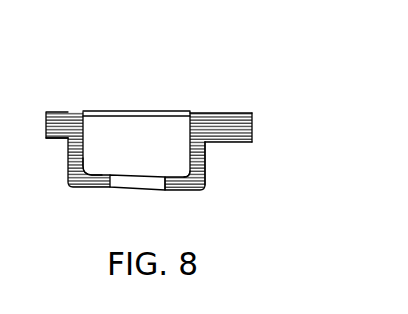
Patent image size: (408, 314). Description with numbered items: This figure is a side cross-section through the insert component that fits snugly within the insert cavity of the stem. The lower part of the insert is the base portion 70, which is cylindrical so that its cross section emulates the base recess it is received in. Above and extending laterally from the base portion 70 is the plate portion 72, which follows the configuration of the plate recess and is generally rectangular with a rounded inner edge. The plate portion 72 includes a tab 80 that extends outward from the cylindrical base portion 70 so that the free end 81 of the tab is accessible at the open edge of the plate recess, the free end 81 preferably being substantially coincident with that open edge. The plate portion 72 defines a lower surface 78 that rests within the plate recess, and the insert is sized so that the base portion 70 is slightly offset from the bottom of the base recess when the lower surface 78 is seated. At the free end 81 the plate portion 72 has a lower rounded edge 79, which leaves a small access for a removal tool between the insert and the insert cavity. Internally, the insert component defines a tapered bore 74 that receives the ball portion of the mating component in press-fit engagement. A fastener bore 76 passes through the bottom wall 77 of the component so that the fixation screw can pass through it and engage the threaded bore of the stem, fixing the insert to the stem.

The base portion 70 is at (207, 170).
The plate portion 72 is at (45, 115).
The tapered bore 74 is at (190, 143).
The fastener bore 76 is at (158, 185).
The bottom wall 77 is at (90, 176).
The lower surface 78 is at (54, 140).
The lower rounded edge 79 is at (254, 142).
The tab 80 is at (238, 113).
The free end 81 is at (252, 128).